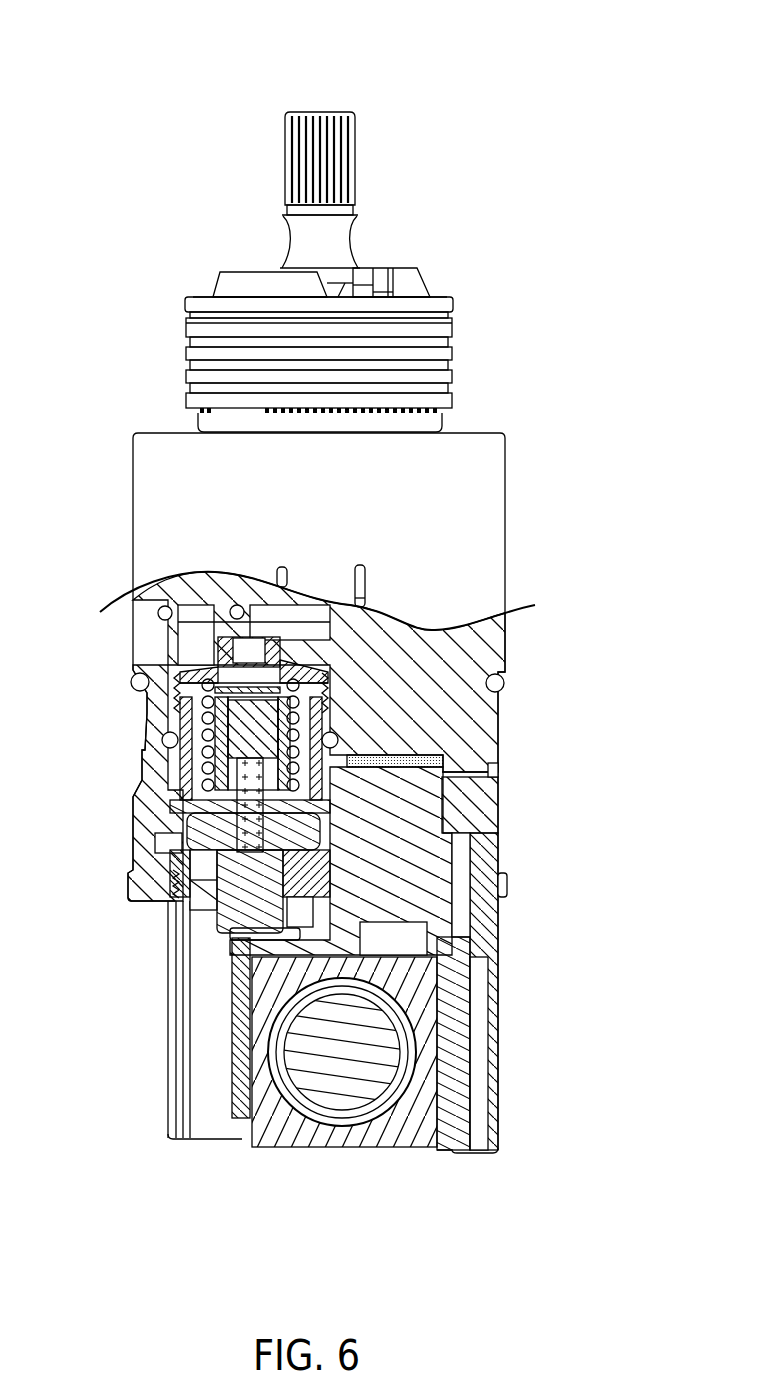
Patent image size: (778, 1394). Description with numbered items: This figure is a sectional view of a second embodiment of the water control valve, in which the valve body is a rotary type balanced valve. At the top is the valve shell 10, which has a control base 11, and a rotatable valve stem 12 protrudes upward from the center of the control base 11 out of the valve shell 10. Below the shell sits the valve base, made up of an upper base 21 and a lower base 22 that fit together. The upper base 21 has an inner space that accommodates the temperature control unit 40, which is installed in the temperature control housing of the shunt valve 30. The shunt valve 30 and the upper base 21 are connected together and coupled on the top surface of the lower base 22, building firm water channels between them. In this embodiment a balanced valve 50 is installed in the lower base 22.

The valve shell 10 is at (141, 430).
The control base 11 is at (354, 270).
The valve stem 12 is at (297, 122).
The upper base 21 is at (500, 650).
The lower base 22 is at (456, 1073).
The shunt valve 30 is at (514, 803).
The temperature control unit 40 is at (202, 664).
The balanced valve 50 is at (312, 1090).